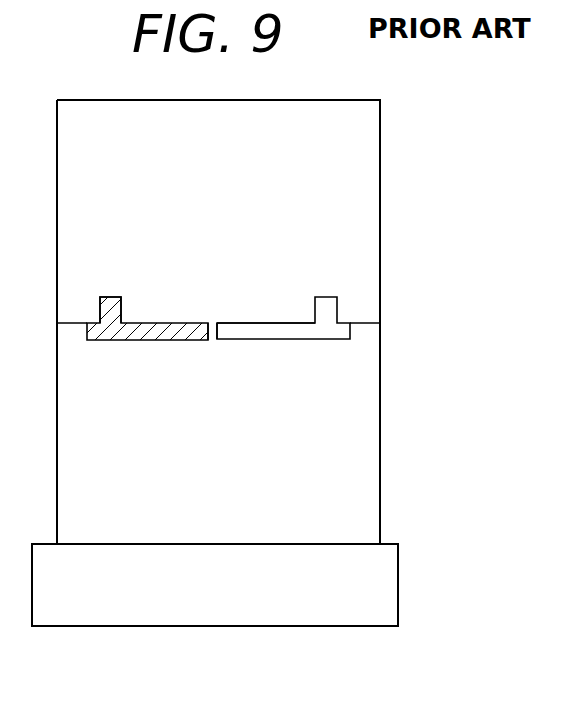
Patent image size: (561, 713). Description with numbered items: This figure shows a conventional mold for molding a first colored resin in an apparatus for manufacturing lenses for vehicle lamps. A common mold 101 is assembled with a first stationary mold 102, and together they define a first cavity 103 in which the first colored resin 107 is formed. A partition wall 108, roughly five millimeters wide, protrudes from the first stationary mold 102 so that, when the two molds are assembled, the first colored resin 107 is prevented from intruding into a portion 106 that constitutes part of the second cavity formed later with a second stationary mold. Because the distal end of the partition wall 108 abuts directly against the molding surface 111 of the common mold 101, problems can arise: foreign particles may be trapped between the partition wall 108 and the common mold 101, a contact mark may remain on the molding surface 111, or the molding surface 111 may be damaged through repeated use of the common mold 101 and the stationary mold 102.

The common mold 101 is at (360, 290).
The first stationary mold 102 is at (360, 523).
The first cavity 103 is at (143, 340).
The portion constituting part of the second cavity 106 is at (235, 323).
The first colored resin 107 is at (133, 320).
The partition wall 108 is at (214, 327).
The molding surface 111 is at (285, 323).